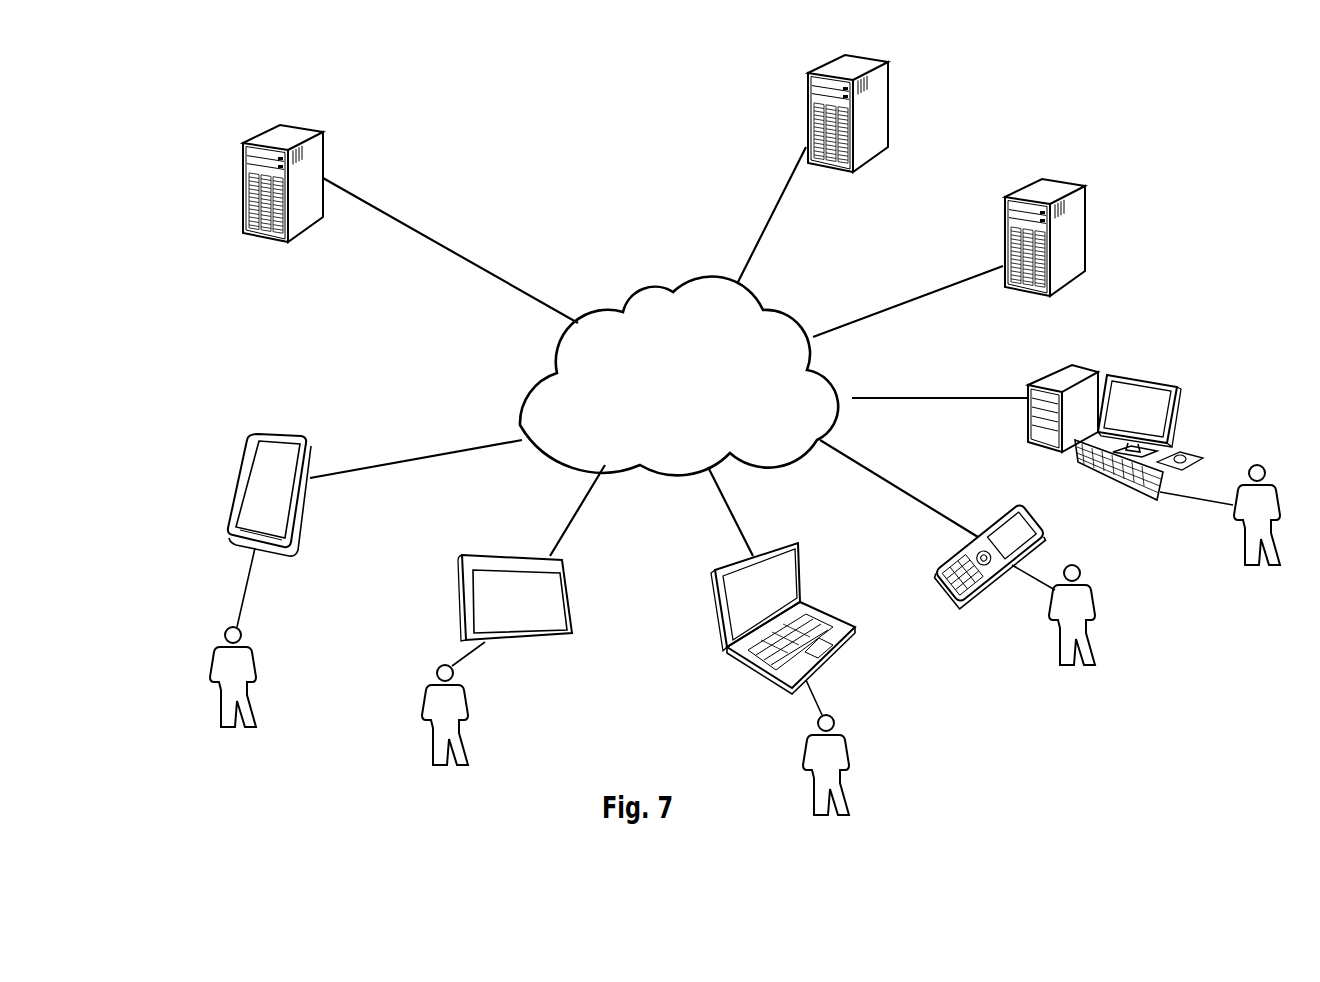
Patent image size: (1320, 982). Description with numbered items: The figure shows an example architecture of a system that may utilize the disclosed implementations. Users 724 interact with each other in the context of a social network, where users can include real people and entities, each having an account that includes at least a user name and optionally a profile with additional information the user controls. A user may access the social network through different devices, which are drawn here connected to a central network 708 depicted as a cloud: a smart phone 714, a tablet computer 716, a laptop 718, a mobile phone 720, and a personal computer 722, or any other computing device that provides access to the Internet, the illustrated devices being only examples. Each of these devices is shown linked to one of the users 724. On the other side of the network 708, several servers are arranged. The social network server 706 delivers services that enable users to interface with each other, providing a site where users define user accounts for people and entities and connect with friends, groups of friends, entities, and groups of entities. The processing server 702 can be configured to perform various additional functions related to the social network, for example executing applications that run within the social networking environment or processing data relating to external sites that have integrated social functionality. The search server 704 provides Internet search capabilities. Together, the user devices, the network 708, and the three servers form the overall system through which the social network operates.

The processing server 702 is at (262, 197).
The search server 704 is at (1072, 237).
The social network server 706 is at (813, 128).
The network 708 is at (638, 290).
The smart phone 714 is at (253, 472).
The tablet computer 716 is at (490, 598).
The laptop 718 is at (778, 573).
The mobile phone 720 is at (1013, 530).
The personal computer 722 is at (1157, 413).
The users 724 is at (220, 668).